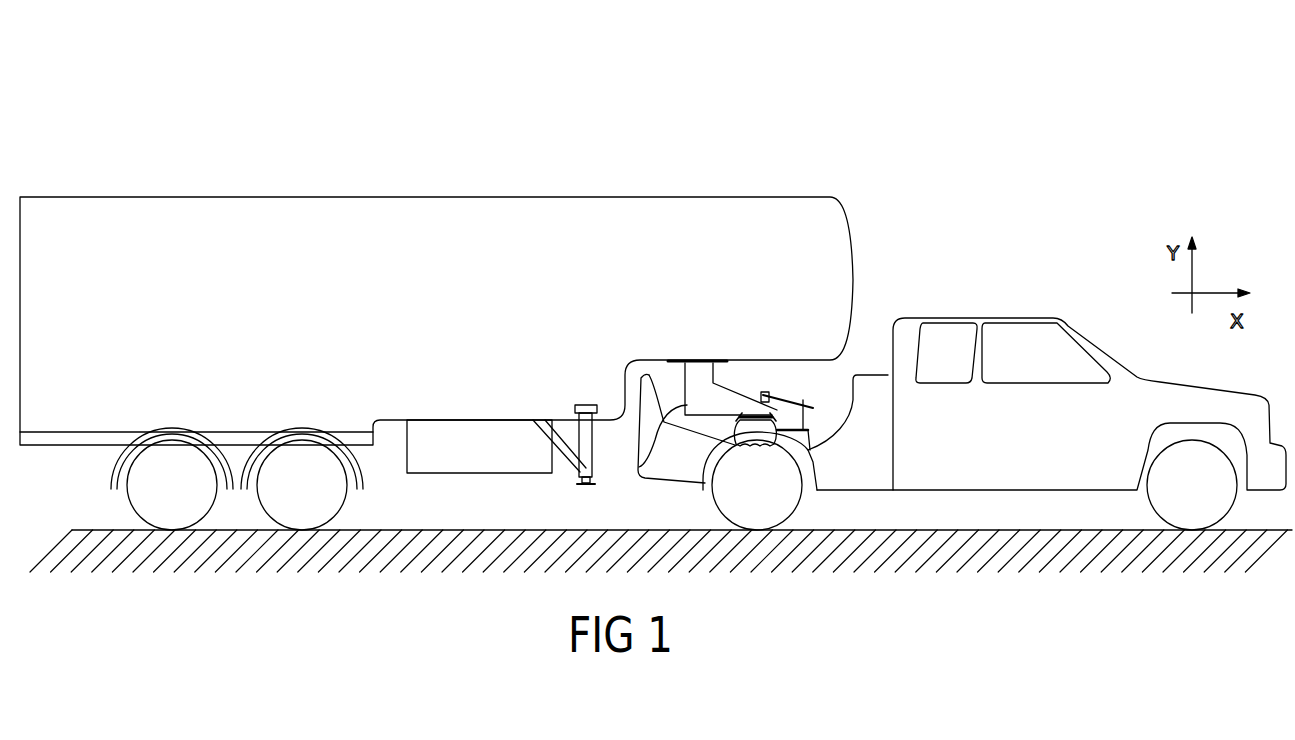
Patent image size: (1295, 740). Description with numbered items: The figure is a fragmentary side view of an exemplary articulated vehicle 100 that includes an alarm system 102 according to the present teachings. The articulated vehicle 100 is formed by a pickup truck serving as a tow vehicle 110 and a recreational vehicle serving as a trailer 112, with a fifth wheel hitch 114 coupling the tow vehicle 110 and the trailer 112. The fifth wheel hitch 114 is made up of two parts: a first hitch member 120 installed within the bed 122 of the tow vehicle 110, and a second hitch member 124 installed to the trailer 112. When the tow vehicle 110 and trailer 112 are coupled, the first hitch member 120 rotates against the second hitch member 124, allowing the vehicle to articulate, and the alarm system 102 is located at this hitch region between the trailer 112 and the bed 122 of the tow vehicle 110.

The articulated vehicle 100 is at (60, 132).
The trailer 112 is at (230, 197).
The bed 122 is at (888, 296).
The tow vehicle 110 is at (987, 318).
The fifth wheel hitch 114 is at (730, 383).
The alarm system 102 is at (797, 398).
The second hitch member 124 is at (640, 461).
The first hitch member 120 is at (707, 488).